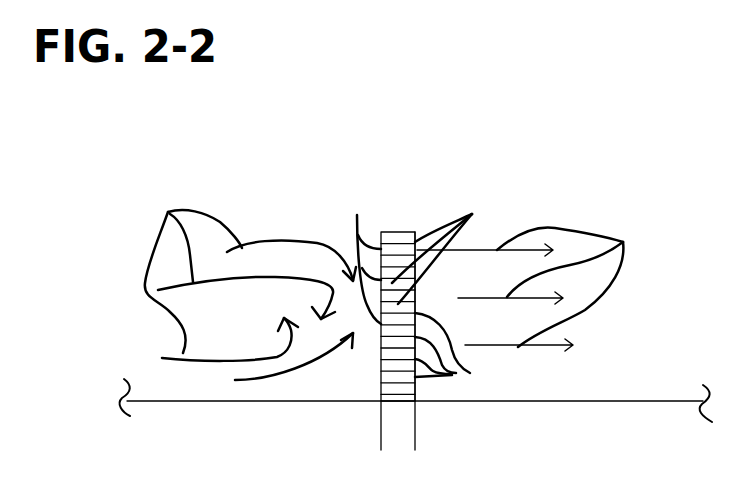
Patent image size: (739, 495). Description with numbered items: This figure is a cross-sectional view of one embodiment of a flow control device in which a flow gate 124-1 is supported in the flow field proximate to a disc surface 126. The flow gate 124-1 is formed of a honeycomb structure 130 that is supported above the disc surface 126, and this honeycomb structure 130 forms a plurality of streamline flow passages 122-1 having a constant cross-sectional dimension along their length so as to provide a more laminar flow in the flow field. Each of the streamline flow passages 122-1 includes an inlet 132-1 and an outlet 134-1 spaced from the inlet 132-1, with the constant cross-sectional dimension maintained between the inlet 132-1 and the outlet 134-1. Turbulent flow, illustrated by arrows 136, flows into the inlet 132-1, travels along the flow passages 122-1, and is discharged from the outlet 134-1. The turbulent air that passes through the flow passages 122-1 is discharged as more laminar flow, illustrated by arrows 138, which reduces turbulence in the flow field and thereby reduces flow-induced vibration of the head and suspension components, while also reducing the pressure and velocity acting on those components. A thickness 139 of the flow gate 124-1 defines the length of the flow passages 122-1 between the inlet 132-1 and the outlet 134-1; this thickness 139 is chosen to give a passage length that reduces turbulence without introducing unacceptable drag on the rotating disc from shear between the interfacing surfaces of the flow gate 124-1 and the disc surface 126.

The flow gate 124-1 is at (392, 212).
The honeycomb structure 130 is at (418, 234).
The streamline flow passages 122-1 is at (460, 241).
The outlet 134-1 is at (470, 373).
The inlet 132-1 is at (343, 255).
The arrows illustrating turbulent flow 136 is at (242, 280).
The arrows illustrating laminar flow 138 is at (539, 279).
The disc surface 126 is at (230, 402).
The thickness 139 is at (310, 427).